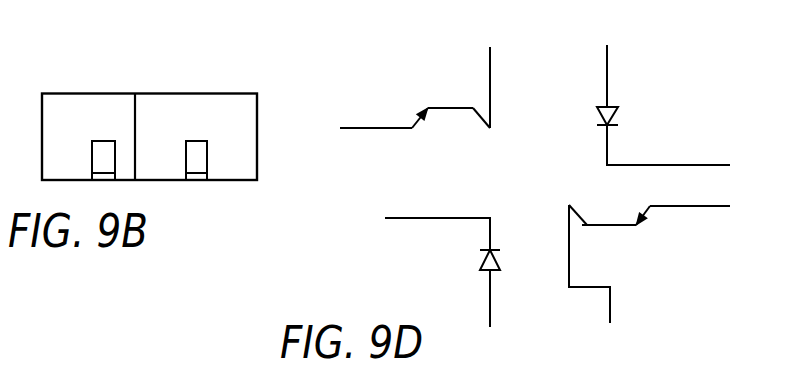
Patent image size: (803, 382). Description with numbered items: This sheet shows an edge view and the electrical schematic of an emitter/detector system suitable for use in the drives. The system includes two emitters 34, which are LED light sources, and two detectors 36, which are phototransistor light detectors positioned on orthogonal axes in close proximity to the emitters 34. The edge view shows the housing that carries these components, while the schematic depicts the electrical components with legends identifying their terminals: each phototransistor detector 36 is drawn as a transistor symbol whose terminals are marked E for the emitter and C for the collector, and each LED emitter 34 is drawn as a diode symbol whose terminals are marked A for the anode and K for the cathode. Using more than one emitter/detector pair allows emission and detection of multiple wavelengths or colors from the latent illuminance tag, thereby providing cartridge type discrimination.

The emitter 34 is at (616, 122).
The detector 36 is at (428, 107).
The anode A is at (546, 189).
The cathode K is at (558, 187).
The collector C is at (548, 187).
The emitter E is at (534, 167).